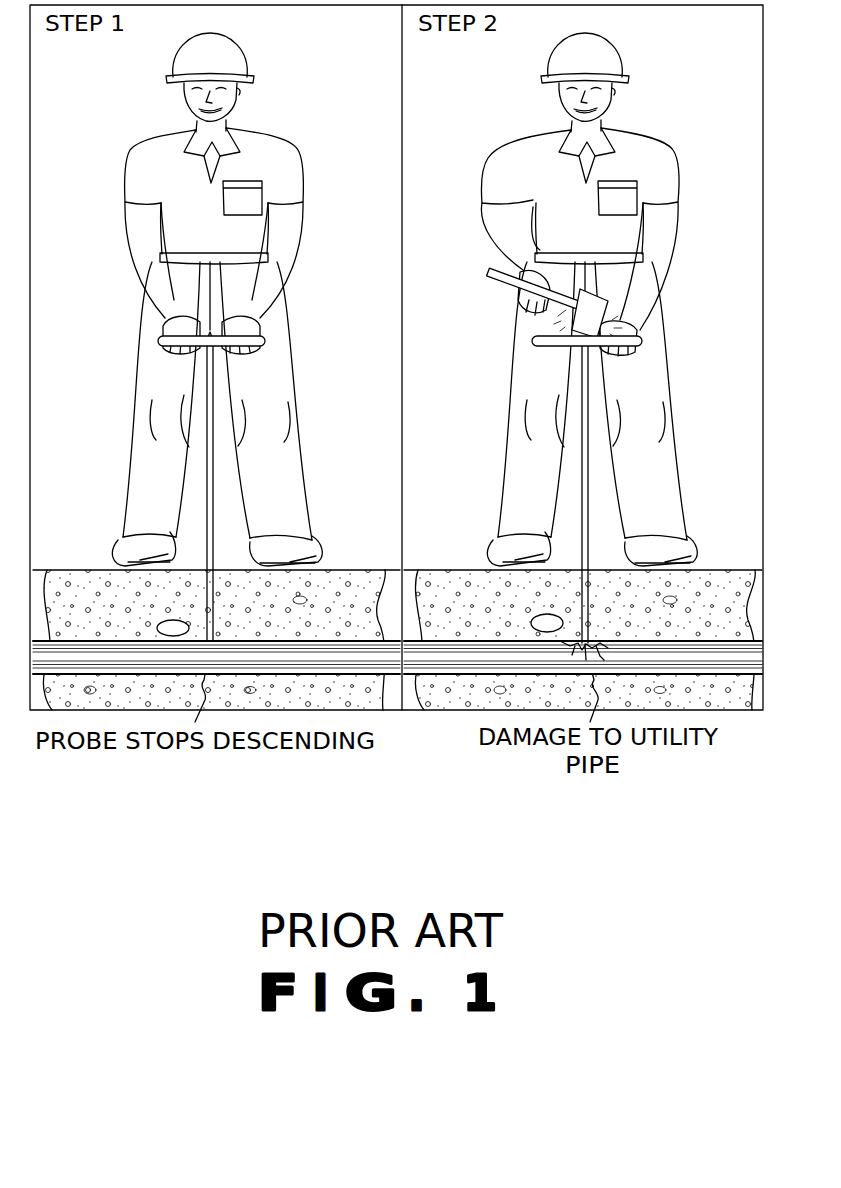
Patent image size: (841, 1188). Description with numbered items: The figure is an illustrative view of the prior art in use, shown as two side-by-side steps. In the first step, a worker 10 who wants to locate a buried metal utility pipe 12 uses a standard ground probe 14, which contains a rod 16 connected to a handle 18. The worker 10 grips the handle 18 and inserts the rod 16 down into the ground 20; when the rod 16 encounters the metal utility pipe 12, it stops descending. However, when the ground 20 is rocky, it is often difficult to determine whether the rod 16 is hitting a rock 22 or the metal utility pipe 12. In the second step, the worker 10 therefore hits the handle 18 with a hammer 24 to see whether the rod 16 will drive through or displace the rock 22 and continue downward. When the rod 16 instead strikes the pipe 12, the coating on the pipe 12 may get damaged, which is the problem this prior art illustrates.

The worker 10 is at (150, 136).
The metal utility pipe 12 is at (75, 660).
The ground probe 14 is at (416, 468).
The rod 16 is at (207, 440).
The handle 18 is at (265, 343).
The ground 20 is at (112, 596).
The rock 22 is at (175, 620).
The hammer 24 is at (620, 280).